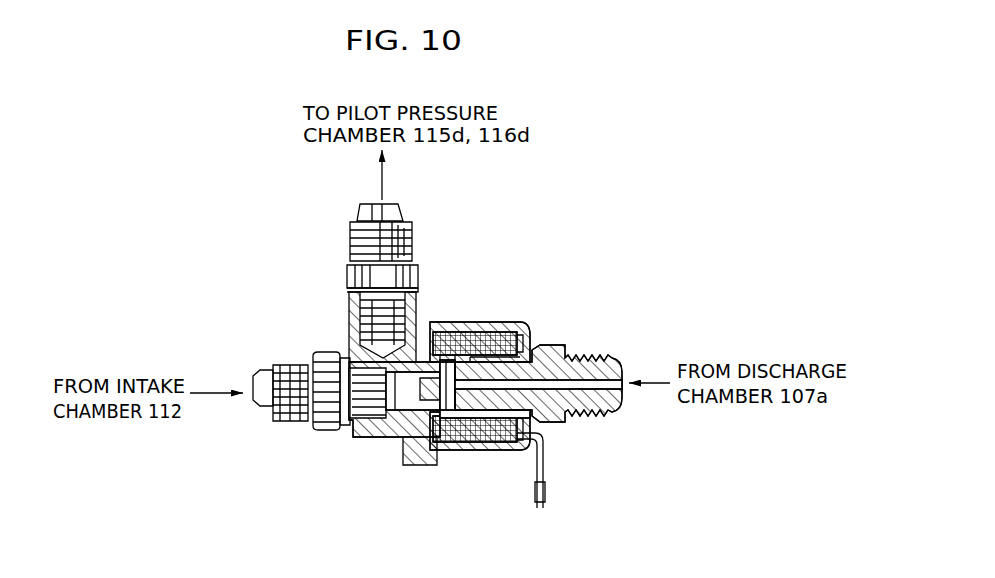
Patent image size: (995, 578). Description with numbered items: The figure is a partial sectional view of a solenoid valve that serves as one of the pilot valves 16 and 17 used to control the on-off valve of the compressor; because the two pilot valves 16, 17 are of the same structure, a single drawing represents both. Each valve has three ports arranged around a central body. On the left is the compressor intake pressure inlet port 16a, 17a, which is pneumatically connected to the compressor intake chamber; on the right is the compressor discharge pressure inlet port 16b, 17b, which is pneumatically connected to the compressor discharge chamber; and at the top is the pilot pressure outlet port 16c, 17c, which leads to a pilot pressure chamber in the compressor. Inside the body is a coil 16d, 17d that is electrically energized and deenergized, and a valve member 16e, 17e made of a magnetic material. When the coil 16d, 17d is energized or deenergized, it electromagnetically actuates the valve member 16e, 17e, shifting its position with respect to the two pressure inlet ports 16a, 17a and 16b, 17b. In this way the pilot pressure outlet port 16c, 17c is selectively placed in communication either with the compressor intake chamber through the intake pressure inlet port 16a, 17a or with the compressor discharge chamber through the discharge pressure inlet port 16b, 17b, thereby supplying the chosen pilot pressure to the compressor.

The pilot valve 16 is at (383, 441).
The pilot valve 17 is at (391, 399).
The compressor intake pressure inlet port 16a is at (290, 414).
The compressor intake pressure inlet port 17a is at (291, 406).
The compressor discharge pressure inlet port 16b is at (612, 372).
The compressor discharge pressure inlet port 17b is at (583, 370).
The pilot pressure outlet port 16c is at (400, 207).
The pilot pressure outlet port 17c is at (438, 248).
The coil 16d is at (478, 343).
The coil 17d is at (495, 324).
The valve member 16e is at (446, 438).
The valve member 17e is at (487, 459).